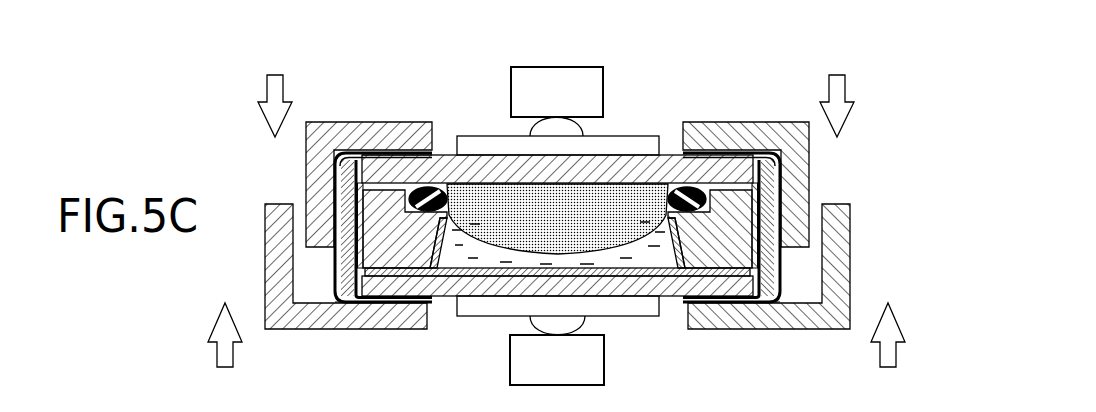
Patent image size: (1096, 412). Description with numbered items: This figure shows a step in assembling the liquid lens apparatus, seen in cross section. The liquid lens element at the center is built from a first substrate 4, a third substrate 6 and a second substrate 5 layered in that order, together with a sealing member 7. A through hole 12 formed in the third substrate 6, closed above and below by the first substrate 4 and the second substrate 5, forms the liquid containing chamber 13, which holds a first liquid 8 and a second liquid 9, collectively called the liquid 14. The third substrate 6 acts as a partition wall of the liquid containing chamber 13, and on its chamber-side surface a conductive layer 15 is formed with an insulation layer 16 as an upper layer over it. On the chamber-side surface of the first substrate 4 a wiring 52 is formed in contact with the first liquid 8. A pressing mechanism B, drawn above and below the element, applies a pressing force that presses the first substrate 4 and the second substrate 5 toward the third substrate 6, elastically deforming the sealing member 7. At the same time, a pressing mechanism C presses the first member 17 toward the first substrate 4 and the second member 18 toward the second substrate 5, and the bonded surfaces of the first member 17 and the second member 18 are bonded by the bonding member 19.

The first substrate 4 is at (357, 150).
The second substrate 5 is at (357, 302).
The third substrate 6 is at (760, 302).
The sealing member 7 is at (433, 152).
The first liquid 8 is at (498, 155).
The second liquid 9 is at (478, 155).
The through hole 12 is at (425, 272).
The liquid containing chamber 13 is at (623, 248).
The liquid 14 is at (497, 90).
The conductive layer 15 is at (402, 262).
The insulation layer 16 is at (450, 280).
The first member 17 is at (340, 163).
The second member 18 is at (338, 238).
The bonding member 19 is at (338, 205).
The wiring 52 is at (668, 158).
The pressing mechanism B is at (553, 66).
The pressing mechanism C is at (390, 133).